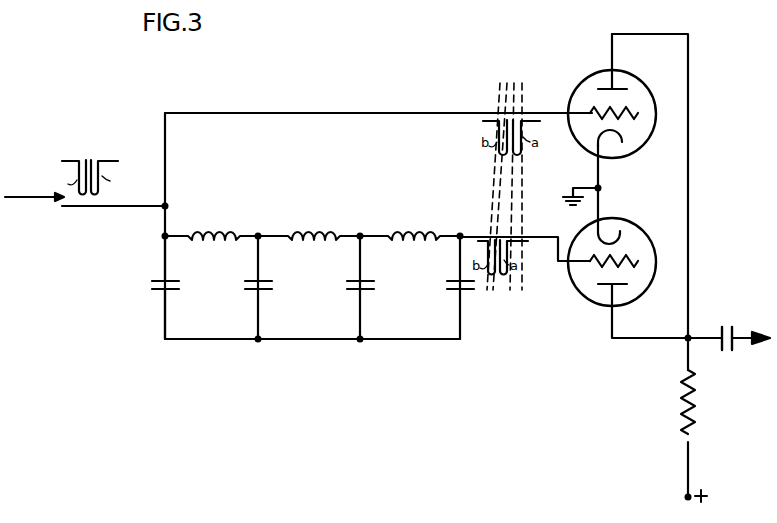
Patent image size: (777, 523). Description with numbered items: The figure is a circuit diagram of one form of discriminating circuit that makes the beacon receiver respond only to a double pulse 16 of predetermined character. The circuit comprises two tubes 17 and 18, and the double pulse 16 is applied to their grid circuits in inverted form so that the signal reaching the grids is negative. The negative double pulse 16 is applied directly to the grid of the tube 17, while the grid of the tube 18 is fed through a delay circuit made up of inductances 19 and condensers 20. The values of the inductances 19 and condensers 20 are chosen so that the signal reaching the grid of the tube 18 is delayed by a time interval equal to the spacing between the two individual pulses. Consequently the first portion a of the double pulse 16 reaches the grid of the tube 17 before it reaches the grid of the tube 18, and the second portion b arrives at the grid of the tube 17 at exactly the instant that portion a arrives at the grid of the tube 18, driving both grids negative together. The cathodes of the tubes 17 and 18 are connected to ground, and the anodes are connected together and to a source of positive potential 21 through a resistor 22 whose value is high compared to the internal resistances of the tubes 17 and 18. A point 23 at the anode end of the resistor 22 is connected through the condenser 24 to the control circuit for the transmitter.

The double pulse 16 is at (98, 156).
The tube 17 is at (586, 72).
The tube 18 is at (650, 238).
The inductances 19 is at (405, 232).
The condensers 20 is at (236, 293).
The source of positive potential 21 is at (686, 500).
The resistor 22 is at (678, 405).
The point 23 is at (690, 338).
The condenser 24 is at (757, 327).